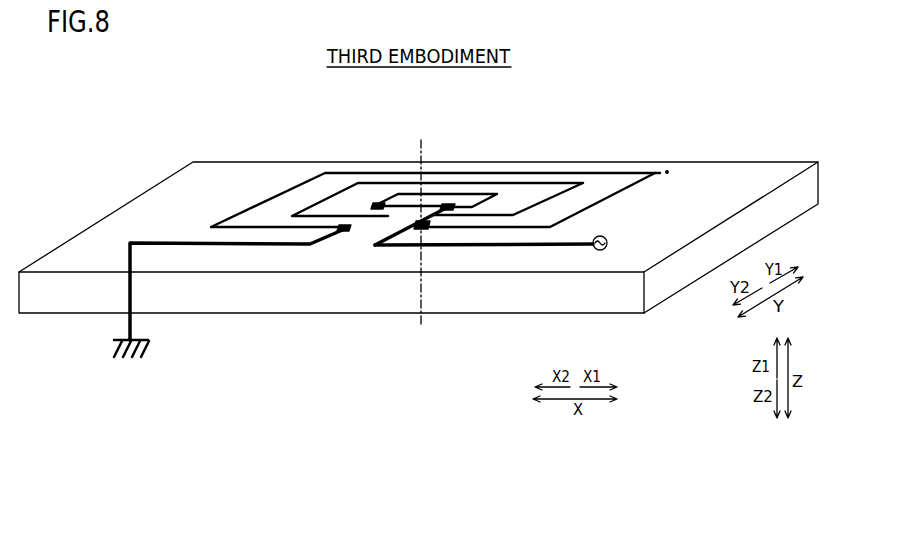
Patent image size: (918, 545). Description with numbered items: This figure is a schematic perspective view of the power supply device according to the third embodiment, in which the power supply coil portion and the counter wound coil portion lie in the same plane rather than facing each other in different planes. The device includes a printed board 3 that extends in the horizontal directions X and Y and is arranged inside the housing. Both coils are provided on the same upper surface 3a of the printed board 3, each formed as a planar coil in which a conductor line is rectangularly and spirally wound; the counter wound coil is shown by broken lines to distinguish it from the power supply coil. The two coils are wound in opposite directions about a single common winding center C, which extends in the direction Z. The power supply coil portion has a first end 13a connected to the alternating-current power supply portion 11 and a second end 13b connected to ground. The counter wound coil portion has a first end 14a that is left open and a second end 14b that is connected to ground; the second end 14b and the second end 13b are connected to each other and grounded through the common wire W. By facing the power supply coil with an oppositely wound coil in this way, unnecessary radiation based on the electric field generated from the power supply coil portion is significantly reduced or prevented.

The printed board 3 is at (418, 215).
The upper surface of printed board 3a is at (708, 175).
The alternating-current power supply portion 11 is at (606, 251).
The first end of power supply coil portion 13a is at (452, 200).
The second end of power supply coil portion 13b is at (348, 230).
The first end of counter wound coil portion 14a is at (403, 198).
The second end of counter wound coil portion 14b is at (425, 230).
The winding center C is at (421, 243).
The common wire W is at (128, 329).